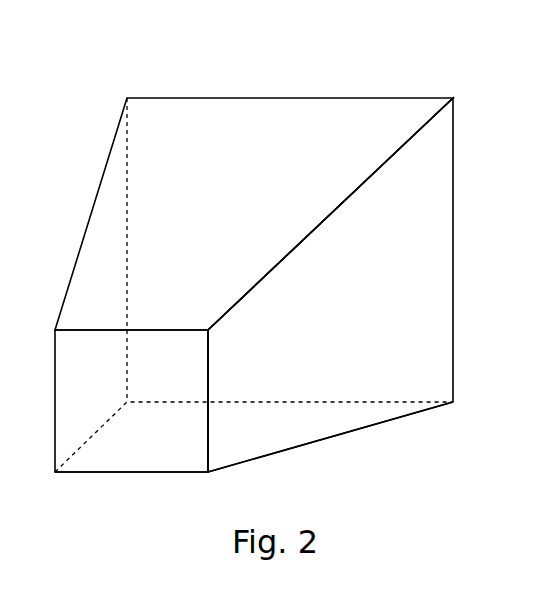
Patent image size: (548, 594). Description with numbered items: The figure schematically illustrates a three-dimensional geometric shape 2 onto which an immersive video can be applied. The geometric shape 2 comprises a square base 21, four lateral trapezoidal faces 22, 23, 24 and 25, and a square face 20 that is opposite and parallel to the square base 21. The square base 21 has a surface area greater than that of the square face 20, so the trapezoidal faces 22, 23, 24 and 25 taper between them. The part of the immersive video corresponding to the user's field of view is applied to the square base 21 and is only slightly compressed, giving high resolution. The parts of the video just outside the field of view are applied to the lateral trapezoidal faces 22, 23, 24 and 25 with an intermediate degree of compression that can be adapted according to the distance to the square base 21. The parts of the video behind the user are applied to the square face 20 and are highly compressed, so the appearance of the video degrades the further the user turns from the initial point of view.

The 3D geometric shape 2 is at (141, 62).
The square face 20 is at (148, 416).
The square base 21 is at (285, 310).
The lateral trapezoidal face 22 is at (334, 355).
The lateral trapezoidal face 23 is at (198, 240).
The lateral trapezoidal face 24 is at (106, 356).
The lateral trapezoidal face 25 is at (207, 436).